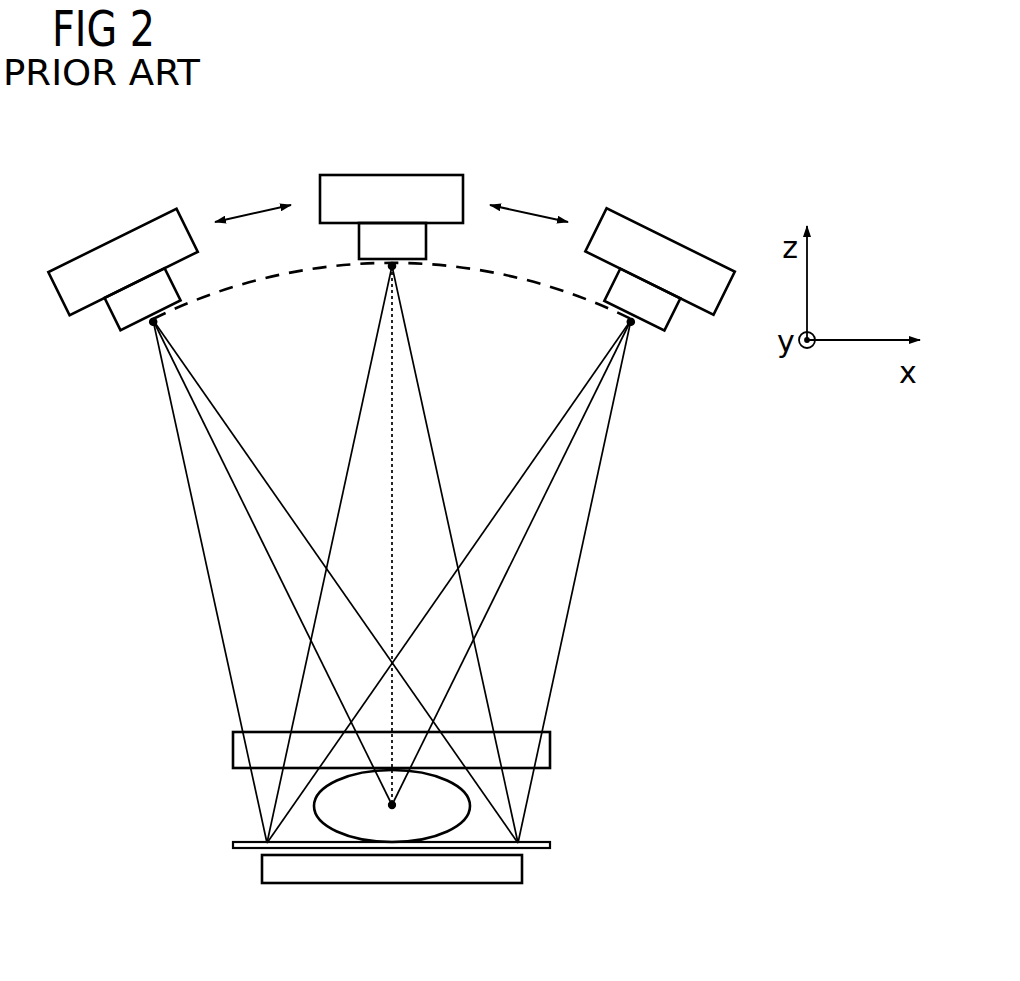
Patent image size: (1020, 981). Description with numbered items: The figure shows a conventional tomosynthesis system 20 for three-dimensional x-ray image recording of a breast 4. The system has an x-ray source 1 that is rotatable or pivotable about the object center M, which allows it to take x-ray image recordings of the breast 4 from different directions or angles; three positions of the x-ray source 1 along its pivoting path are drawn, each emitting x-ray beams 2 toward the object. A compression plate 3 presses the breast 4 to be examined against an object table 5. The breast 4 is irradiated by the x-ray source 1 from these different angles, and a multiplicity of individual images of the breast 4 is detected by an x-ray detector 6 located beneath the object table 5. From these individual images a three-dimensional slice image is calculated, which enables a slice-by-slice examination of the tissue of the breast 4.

The x-ray source 1 is at (113, 240).
The x-ray beams 2 is at (182, 465).
The compression plate 3 is at (550, 750).
The breast 4 is at (453, 813).
The object table 5 is at (550, 847).
The x-ray detector 6 is at (272, 870).
The tomosynthesis system 20 is at (712, 126).
The object center M is at (388, 808).